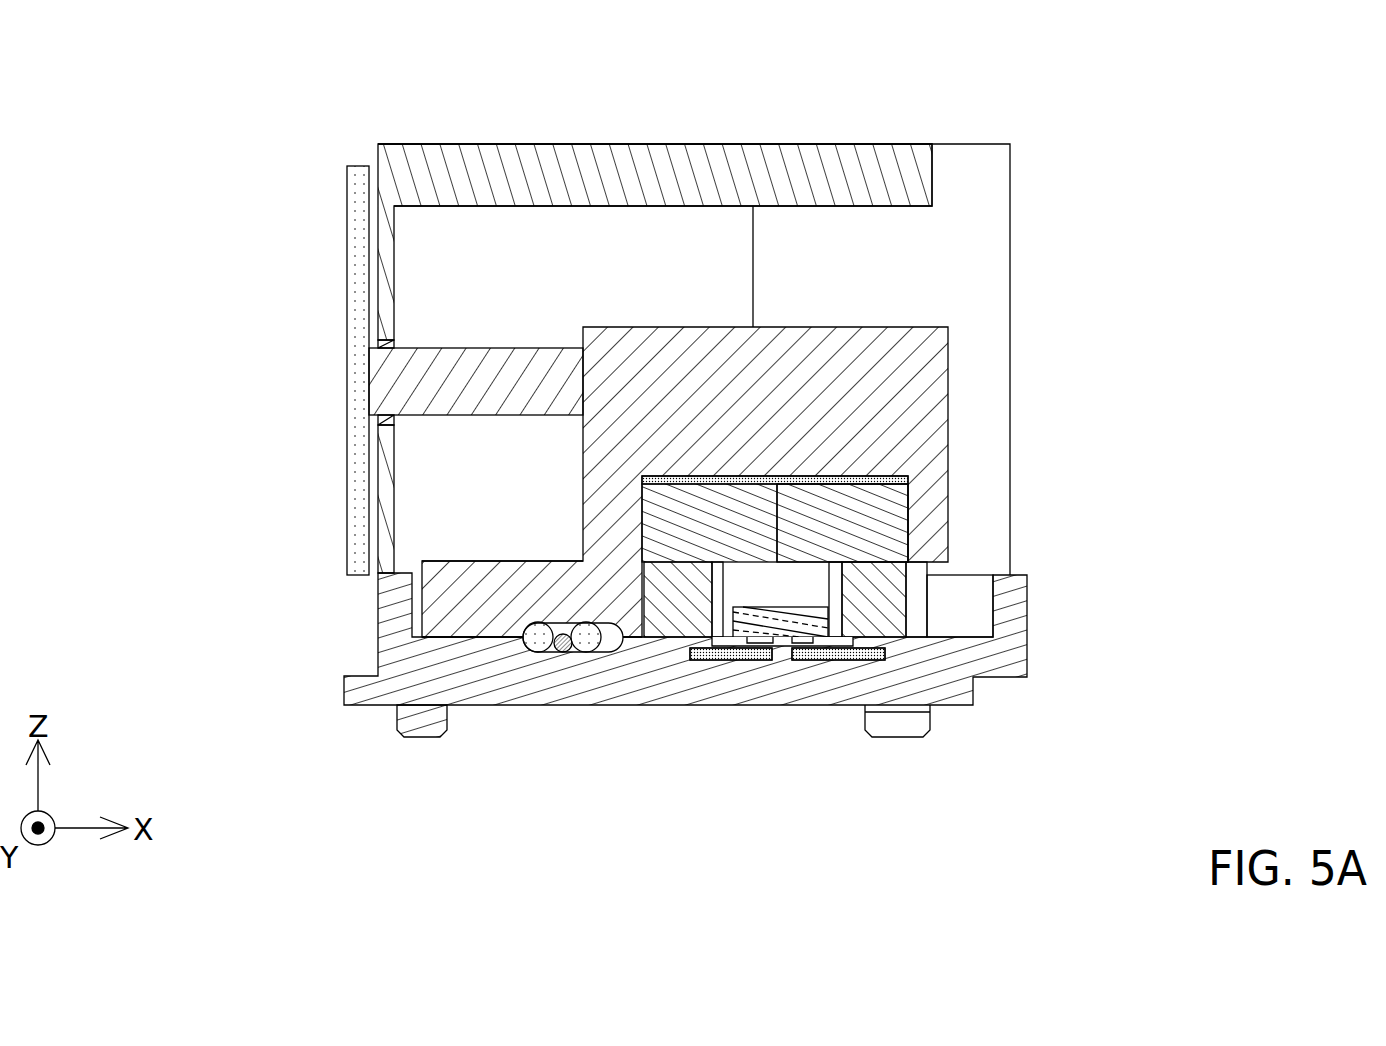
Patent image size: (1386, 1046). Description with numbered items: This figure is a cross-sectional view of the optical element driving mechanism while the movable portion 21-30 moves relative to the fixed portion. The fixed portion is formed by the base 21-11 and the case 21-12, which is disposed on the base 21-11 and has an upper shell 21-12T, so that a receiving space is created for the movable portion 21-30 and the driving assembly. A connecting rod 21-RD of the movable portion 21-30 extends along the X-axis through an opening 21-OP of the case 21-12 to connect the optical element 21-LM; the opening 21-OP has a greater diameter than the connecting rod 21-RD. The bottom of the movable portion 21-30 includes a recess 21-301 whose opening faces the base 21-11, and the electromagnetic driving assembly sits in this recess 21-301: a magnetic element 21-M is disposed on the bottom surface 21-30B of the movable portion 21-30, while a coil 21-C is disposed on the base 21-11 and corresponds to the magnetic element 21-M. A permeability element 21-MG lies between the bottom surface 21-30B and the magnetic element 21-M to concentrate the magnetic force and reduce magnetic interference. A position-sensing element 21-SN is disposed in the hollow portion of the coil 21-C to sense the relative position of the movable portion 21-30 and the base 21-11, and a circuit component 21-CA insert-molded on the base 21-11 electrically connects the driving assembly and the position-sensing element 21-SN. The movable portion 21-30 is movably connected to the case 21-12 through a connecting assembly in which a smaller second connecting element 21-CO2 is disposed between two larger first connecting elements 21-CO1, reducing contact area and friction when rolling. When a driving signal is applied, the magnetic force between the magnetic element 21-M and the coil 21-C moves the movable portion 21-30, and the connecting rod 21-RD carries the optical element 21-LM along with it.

The case 21-12 is at (777, 130).
The upper shell 21-12T is at (648, 178).
The optical element 21-LM is at (357, 233).
The connecting rod 21-RD is at (440, 378).
The opening 21-OP is at (391, 422).
The movable portion 21-30 is at (875, 402).
The magnetic element 21-M is at (708, 520).
The permeability element 21-MG is at (873, 480).
The bottom surface 21-30B is at (883, 518).
The recess 21-301 is at (905, 540).
The coil 21-C is at (875, 605).
The base 21-11 is at (403, 655).
The first connecting element 21-CO1 is at (538, 643).
The second connecting element 21-CO2 is at (563, 651).
The position-sensing element 21-SN is at (763, 623).
The circuit component 21-CA is at (808, 660).